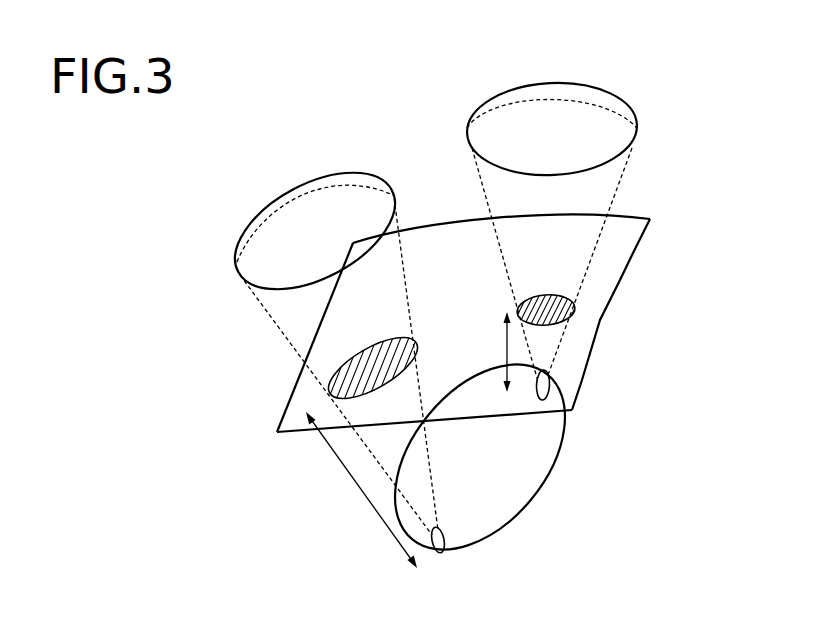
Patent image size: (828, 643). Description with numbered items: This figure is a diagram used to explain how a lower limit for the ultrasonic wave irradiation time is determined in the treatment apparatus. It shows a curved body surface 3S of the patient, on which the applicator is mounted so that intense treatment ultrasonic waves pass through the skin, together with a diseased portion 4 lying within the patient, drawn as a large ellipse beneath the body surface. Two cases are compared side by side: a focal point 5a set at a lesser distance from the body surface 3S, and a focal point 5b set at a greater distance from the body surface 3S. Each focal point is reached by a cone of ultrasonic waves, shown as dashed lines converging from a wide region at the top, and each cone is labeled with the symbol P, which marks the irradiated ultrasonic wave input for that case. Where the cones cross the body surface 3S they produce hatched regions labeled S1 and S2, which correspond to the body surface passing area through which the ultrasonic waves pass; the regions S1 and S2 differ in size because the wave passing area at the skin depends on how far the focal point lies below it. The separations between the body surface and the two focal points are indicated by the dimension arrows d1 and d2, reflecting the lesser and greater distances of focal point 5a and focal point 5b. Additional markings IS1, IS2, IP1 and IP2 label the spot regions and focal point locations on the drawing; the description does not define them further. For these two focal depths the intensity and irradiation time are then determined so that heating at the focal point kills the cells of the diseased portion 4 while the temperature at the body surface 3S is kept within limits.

The body surface 3S is at (641, 219).
The diseased portion 4 is at (541, 487).
The focal point 5a is at (544, 401).
The focal point 5b is at (447, 545).
The first light spot S1 is at (550, 299).
The second light spot S2 is at (377, 359).
The image of first spot IS1 is at (573, 298).
The image of second spot IS2 is at (328, 384).
The first image point IP1 is at (550, 387).
The second image point IP2 is at (437, 552).
The first distance d1 is at (494, 352).
The second distance d2 is at (361, 490).
The light beam P(w) P is at (553, 48).